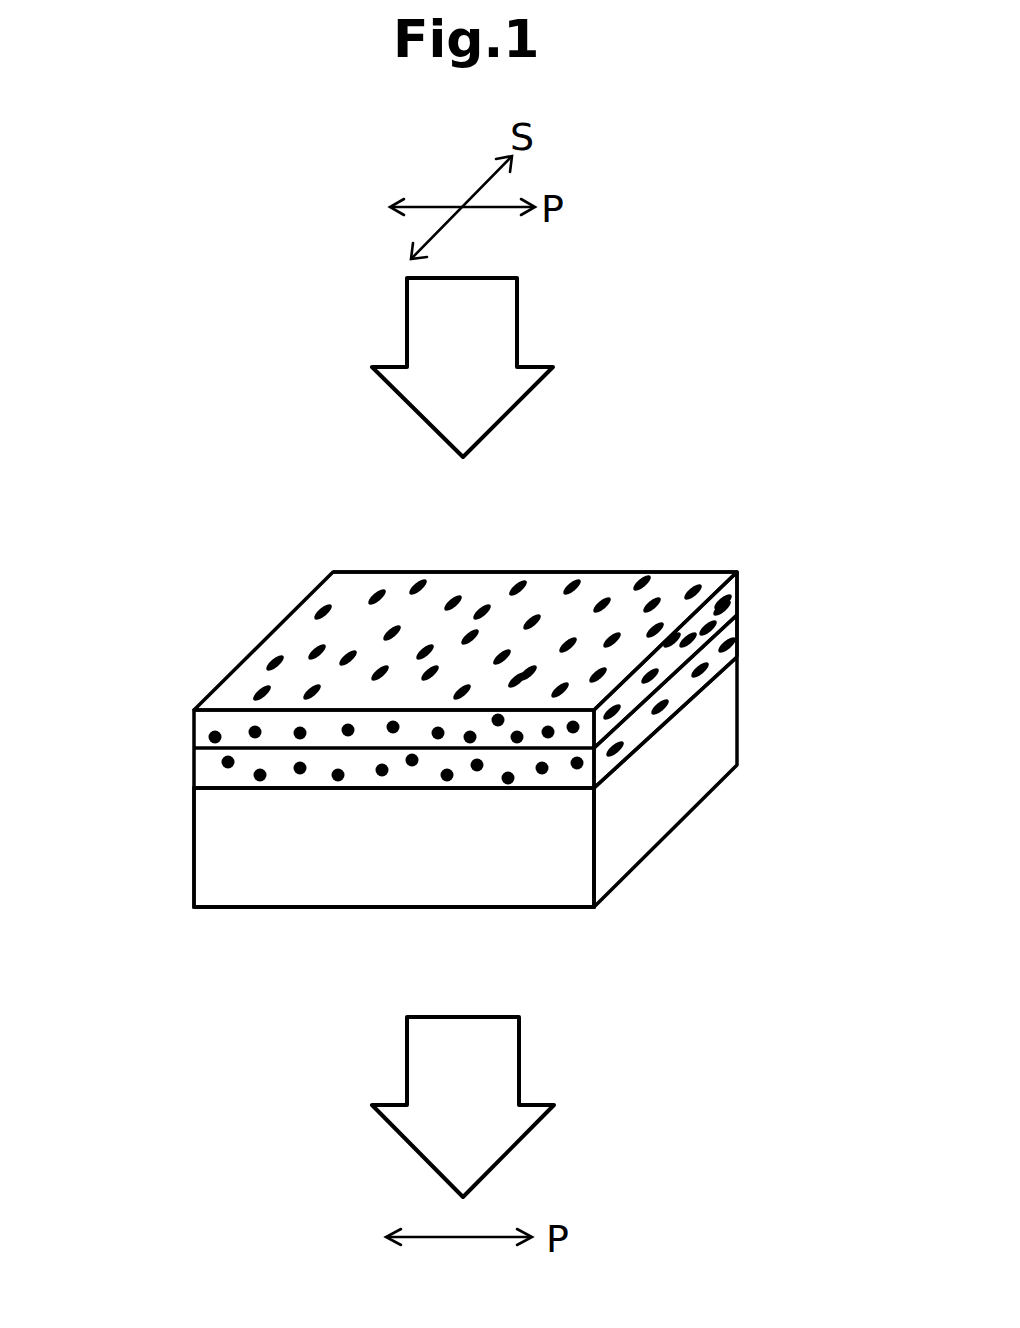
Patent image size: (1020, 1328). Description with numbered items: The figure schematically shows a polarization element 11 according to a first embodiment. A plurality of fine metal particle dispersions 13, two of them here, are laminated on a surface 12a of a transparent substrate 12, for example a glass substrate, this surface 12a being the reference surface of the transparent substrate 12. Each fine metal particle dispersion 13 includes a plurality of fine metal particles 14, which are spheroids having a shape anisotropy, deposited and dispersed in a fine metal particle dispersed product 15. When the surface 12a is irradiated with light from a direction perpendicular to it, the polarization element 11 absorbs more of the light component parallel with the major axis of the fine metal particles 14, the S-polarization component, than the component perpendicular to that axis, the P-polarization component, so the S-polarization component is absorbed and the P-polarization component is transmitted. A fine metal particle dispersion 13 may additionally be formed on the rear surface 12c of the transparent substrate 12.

The polarization element 11 is at (693, 483).
The transparent substrate 12 is at (727, 722).
The surface 12a is at (223, 787).
The rear surface 12c is at (545, 908).
The fine metal particle dispersion 13 is at (740, 587).
The fine metal particle 14 is at (569, 590).
The fine metal particle dispersed product 15 is at (673, 580).